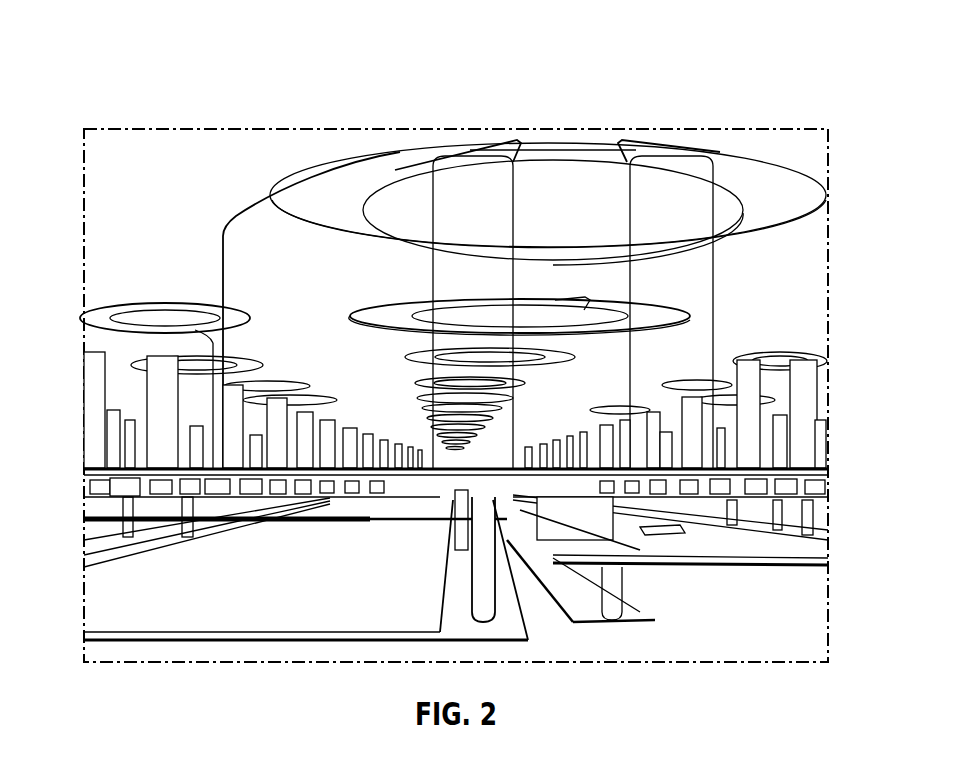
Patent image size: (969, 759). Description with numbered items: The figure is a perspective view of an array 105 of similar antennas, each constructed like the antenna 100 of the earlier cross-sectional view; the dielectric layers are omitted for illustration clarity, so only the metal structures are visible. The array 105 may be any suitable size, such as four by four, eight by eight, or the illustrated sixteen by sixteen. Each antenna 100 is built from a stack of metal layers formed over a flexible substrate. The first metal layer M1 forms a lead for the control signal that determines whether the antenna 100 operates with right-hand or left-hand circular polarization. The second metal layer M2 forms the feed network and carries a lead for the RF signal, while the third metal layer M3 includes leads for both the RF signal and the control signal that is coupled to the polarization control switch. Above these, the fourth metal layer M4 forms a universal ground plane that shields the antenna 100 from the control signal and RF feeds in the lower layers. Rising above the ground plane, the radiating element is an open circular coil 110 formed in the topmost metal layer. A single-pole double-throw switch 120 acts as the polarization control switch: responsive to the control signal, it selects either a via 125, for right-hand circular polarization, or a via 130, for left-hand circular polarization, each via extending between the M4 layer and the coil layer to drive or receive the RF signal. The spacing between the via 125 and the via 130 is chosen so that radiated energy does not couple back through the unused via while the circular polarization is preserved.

The array 105 is at (147, 54).
The antenna 100 is at (840, 194).
The open circular coil 110 is at (397, 157).
The via 125 is at (314, 182).
The via 130 is at (712, 322).
The single-pole double-throw switch 120 is at (442, 478).
The first metal layer M1 is at (84, 636).
The second metal layer M2 is at (84, 521).
The third metal layer M3 is at (84, 505).
The fourth metal layer M4 is at (84, 471).